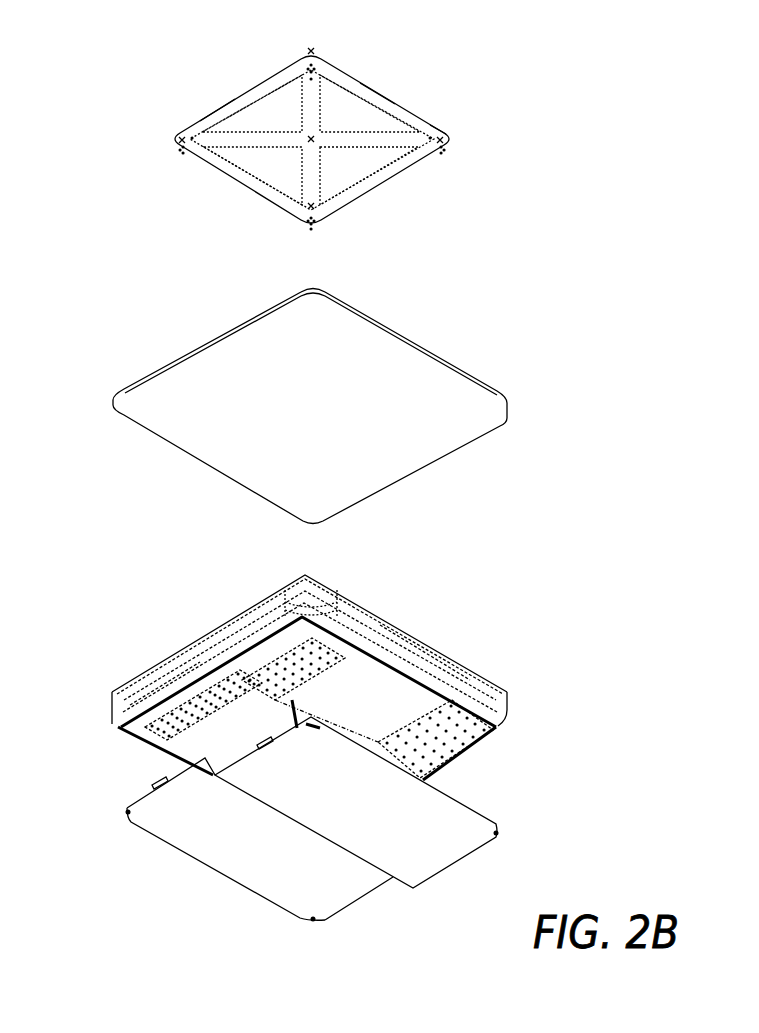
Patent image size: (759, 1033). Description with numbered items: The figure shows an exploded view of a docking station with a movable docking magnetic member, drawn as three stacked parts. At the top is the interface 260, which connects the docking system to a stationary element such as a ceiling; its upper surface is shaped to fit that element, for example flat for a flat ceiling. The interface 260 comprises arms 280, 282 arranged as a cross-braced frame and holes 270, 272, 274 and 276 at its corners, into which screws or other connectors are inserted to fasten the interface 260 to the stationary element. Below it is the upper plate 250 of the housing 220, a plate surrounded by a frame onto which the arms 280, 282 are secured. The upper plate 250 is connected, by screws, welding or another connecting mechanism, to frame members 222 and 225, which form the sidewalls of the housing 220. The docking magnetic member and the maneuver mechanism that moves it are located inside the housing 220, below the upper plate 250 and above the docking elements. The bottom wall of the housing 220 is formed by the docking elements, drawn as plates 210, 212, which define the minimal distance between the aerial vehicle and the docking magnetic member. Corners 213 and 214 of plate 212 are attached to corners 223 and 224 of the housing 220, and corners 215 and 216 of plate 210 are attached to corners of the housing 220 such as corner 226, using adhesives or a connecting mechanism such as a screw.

The plate 210 is at (240, 884).
The plate 212 is at (455, 850).
The corner of plate 212 213 is at (315, 729).
The corner of plate 212 214 is at (500, 834).
The corner of plate 210 215 is at (126, 812).
The corner of plate 210 216 is at (325, 921).
The housing 220 is at (468, 683).
The frame member 222 is at (416, 640).
The corner of housing 223 is at (323, 620).
The corner of housing 224 is at (500, 728).
The frame member 225 is at (160, 690).
The corner of housing 226 is at (125, 742).
The upper plate 250 is at (328, 416).
The interface 260 is at (381, 182).
The hole 270 is at (453, 137).
The hole 272 is at (316, 52).
The hole 274 is at (176, 143).
The hole 276 is at (295, 213).
The arm 280 is at (222, 103).
The arm 282 is at (378, 97).